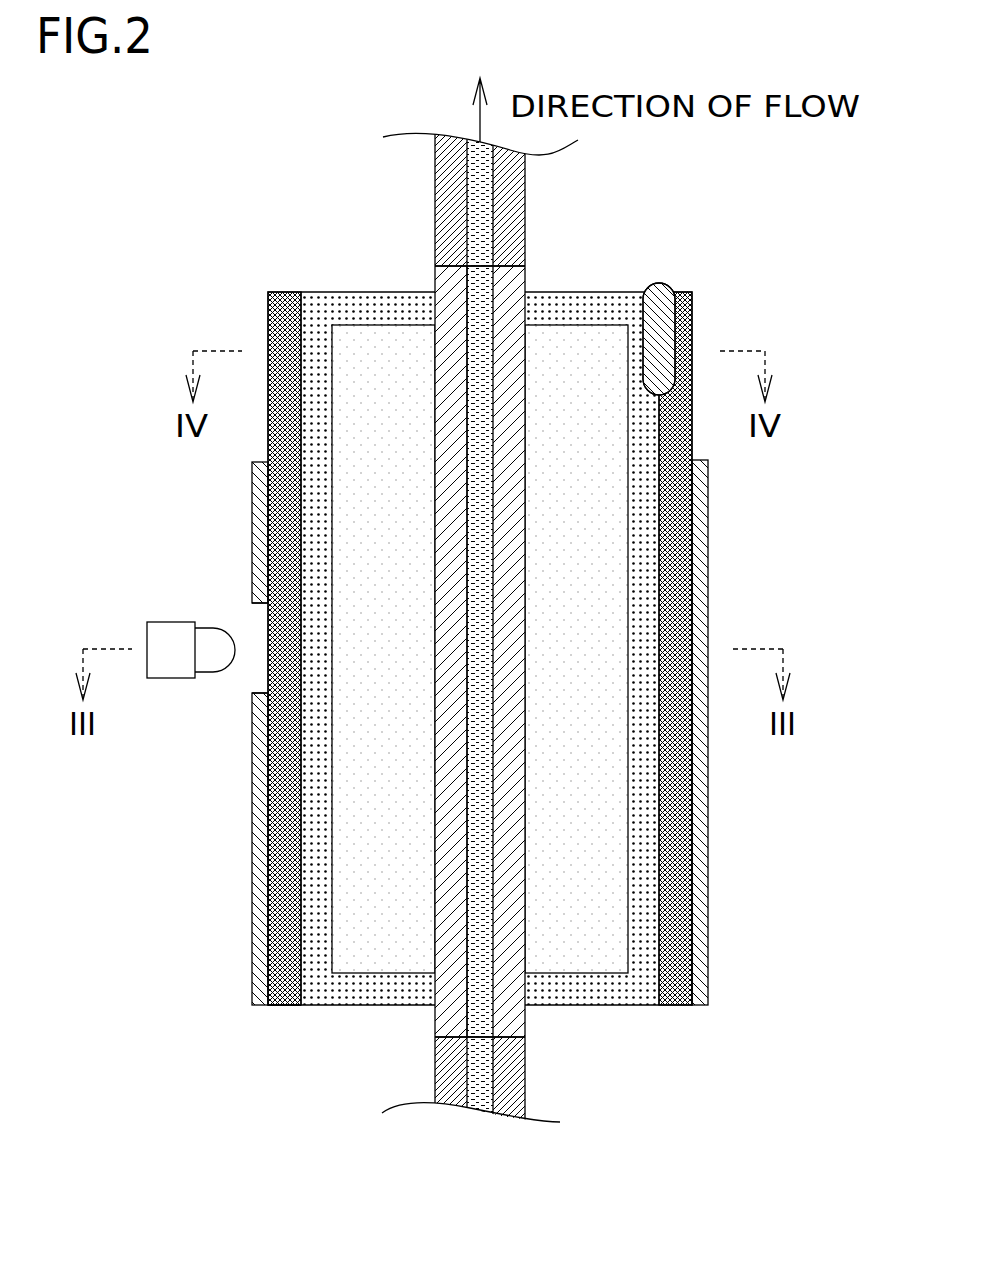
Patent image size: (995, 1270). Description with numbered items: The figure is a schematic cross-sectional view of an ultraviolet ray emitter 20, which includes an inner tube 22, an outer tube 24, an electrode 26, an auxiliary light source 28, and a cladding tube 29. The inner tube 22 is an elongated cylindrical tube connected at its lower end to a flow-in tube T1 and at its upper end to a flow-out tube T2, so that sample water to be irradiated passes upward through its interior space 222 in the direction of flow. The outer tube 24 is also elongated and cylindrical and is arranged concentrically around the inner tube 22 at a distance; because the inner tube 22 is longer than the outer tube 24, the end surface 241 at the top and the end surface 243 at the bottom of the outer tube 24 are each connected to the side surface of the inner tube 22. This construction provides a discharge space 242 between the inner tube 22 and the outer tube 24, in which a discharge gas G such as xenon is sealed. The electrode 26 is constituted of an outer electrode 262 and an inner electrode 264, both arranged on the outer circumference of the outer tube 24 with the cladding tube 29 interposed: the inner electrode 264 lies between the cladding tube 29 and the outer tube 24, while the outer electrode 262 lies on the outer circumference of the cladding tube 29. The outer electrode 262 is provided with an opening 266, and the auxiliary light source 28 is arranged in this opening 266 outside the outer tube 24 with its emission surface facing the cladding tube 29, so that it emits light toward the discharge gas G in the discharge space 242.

The ultraviolet ray emitter 20 is at (800, 277).
The inner tube 22 is at (588, 625).
The interior space 222 is at (514, 592).
The outer tube 24 is at (513, 664).
The end surface 241 is at (371, 292).
The discharge space 242 is at (611, 906).
The end surface 243 is at (370, 1008).
The electrode 26 is at (408, 607).
The outer electrode 262 is at (252, 952).
The inner electrode 264 is at (663, 283).
The opening 266 is at (240, 598).
The auxiliary light source 28 is at (178, 680).
The cladding tube 29 is at (283, 1006).
The discharge gas G is at (600, 745).
The tube T1 is at (527, 1080).
The tube T2 is at (527, 185).